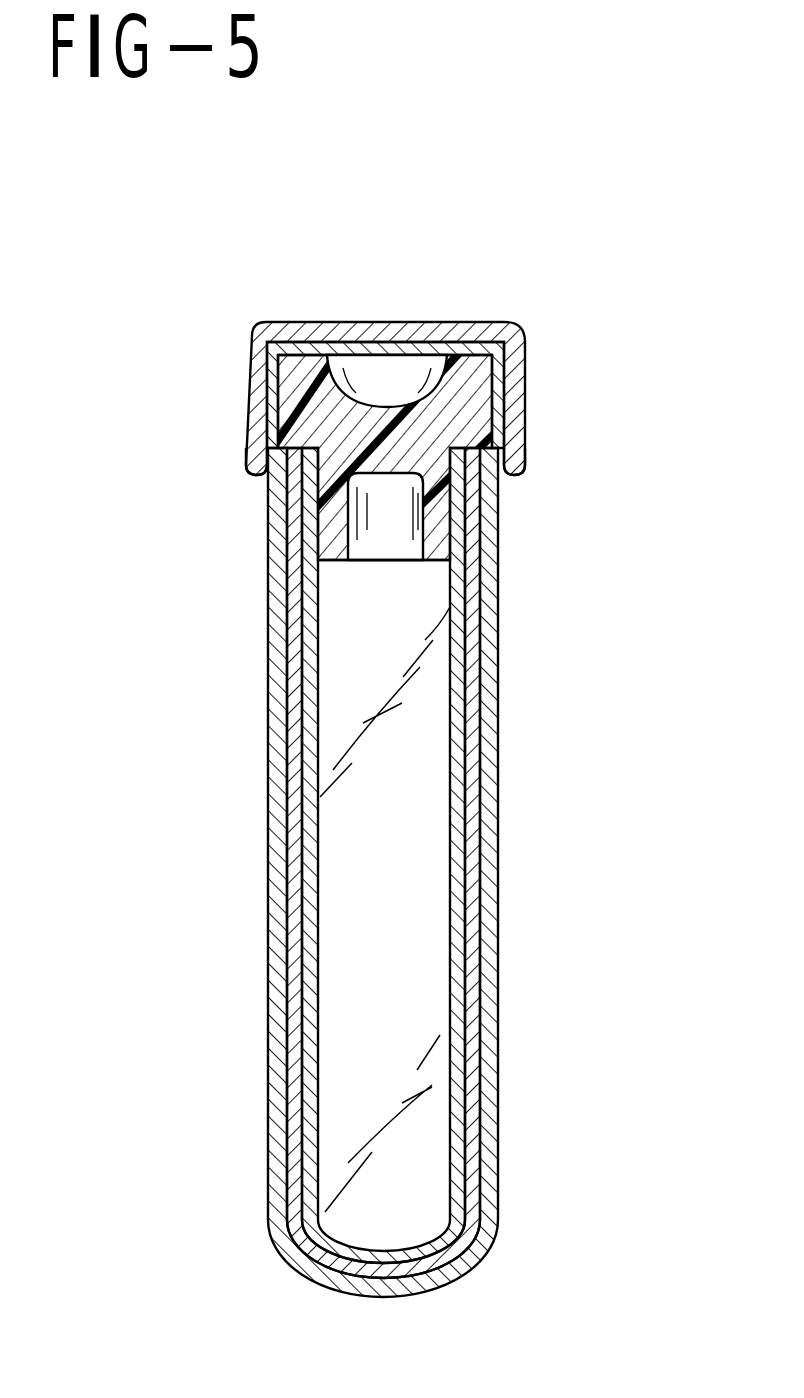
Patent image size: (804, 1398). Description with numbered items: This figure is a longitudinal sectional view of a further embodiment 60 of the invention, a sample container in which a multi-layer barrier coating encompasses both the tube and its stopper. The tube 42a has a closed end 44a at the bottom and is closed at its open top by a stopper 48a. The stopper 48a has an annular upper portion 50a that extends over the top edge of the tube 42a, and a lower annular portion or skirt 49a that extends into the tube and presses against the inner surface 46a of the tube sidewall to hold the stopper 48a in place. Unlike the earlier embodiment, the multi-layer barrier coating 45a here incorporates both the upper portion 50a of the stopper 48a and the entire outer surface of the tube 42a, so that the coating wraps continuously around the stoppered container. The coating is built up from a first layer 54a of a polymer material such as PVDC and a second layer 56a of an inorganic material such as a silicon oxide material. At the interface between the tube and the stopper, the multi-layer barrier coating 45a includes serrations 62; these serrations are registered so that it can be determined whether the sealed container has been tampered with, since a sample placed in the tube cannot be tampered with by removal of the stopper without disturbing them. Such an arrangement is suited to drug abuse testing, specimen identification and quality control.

The further embodiment 60 is at (588, 293).
The stopper 48a is at (262, 326).
The upper portion 50a is at (523, 432).
The serrations 62 is at (273, 497).
The skirt 49a is at (330, 540).
The tube 42a is at (462, 914).
The multi-layer barrier coating 45a is at (292, 913).
The first layer 54a is at (467, 1075).
The second layer 56a is at (268, 1134).
The end 44a is at (377, 1265).
The inner surface 46a is at (447, 820).